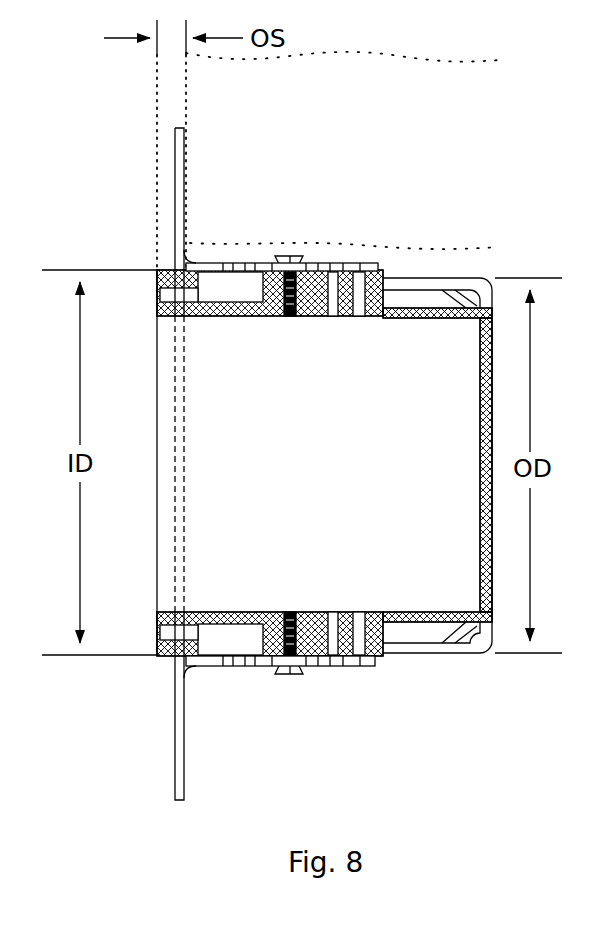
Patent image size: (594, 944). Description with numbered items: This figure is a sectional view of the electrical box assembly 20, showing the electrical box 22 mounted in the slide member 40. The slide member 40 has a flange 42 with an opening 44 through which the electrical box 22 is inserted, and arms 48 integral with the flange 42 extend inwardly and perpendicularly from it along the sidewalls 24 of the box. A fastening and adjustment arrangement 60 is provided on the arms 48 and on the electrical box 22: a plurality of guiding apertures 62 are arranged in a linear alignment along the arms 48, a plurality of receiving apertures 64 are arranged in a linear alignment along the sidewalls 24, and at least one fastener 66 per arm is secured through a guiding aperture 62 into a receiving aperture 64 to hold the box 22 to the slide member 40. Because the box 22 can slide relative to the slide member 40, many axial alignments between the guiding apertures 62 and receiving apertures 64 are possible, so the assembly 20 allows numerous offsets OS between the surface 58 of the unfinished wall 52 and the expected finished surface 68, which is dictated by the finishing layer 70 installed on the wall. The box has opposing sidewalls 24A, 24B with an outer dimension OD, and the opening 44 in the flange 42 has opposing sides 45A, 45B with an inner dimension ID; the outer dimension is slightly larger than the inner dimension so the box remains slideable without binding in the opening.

The electrical box assembly 20 is at (354, 712).
The electrical box 22 is at (455, 278).
The sidewalls 24 is at (420, 290).
The opposing sidewall 24A is at (403, 318).
The opposing sidewall 24B is at (411, 612).
The slide member 40 is at (187, 128).
The flange 42 is at (178, 734).
The opening 44 is at (168, 403).
The opposing side 45A is at (183, 290).
The opposing side 45B is at (187, 612).
The arms 48 is at (381, 272).
The unfinished wall 52 is at (246, 80).
The surface 58 is at (179, 97).
The fastening and adjustment arrangement 60 is at (306, 236).
The guiding apertures 62 is at (215, 263).
The receiving apertures 64 is at (290, 317).
The fastener 66 is at (291, 256).
The expected finished surface 68 is at (150, 138).
The finishing layer 70 is at (178, 80).